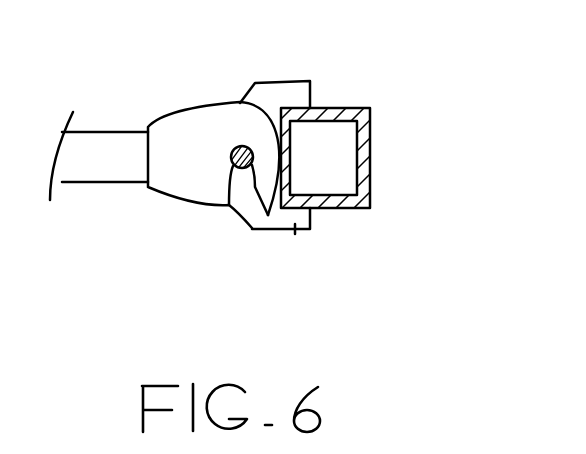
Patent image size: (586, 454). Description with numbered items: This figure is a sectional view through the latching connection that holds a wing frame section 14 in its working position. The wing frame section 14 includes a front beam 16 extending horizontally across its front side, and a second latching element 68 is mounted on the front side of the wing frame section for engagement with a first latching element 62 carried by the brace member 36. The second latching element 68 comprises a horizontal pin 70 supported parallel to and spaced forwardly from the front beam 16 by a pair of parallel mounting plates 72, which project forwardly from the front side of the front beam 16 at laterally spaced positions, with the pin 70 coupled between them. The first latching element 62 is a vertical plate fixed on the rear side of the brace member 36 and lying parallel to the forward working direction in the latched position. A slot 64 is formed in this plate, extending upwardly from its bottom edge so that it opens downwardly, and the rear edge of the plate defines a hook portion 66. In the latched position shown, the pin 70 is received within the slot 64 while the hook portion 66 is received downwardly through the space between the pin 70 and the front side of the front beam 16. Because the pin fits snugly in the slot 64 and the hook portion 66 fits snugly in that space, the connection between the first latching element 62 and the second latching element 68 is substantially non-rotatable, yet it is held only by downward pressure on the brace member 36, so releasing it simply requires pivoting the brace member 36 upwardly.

The wing frame section 14 is at (362, 91).
The front beam 16 is at (372, 152).
The brace member 36 is at (105, 101).
The first latching element 62 is at (171, 201).
The slot 64 is at (226, 190).
The hook portion 66 is at (263, 208).
The second latching element 68 is at (295, 55).
The horizontal pin 70 is at (234, 148).
The mounting plate 72 is at (295, 234).